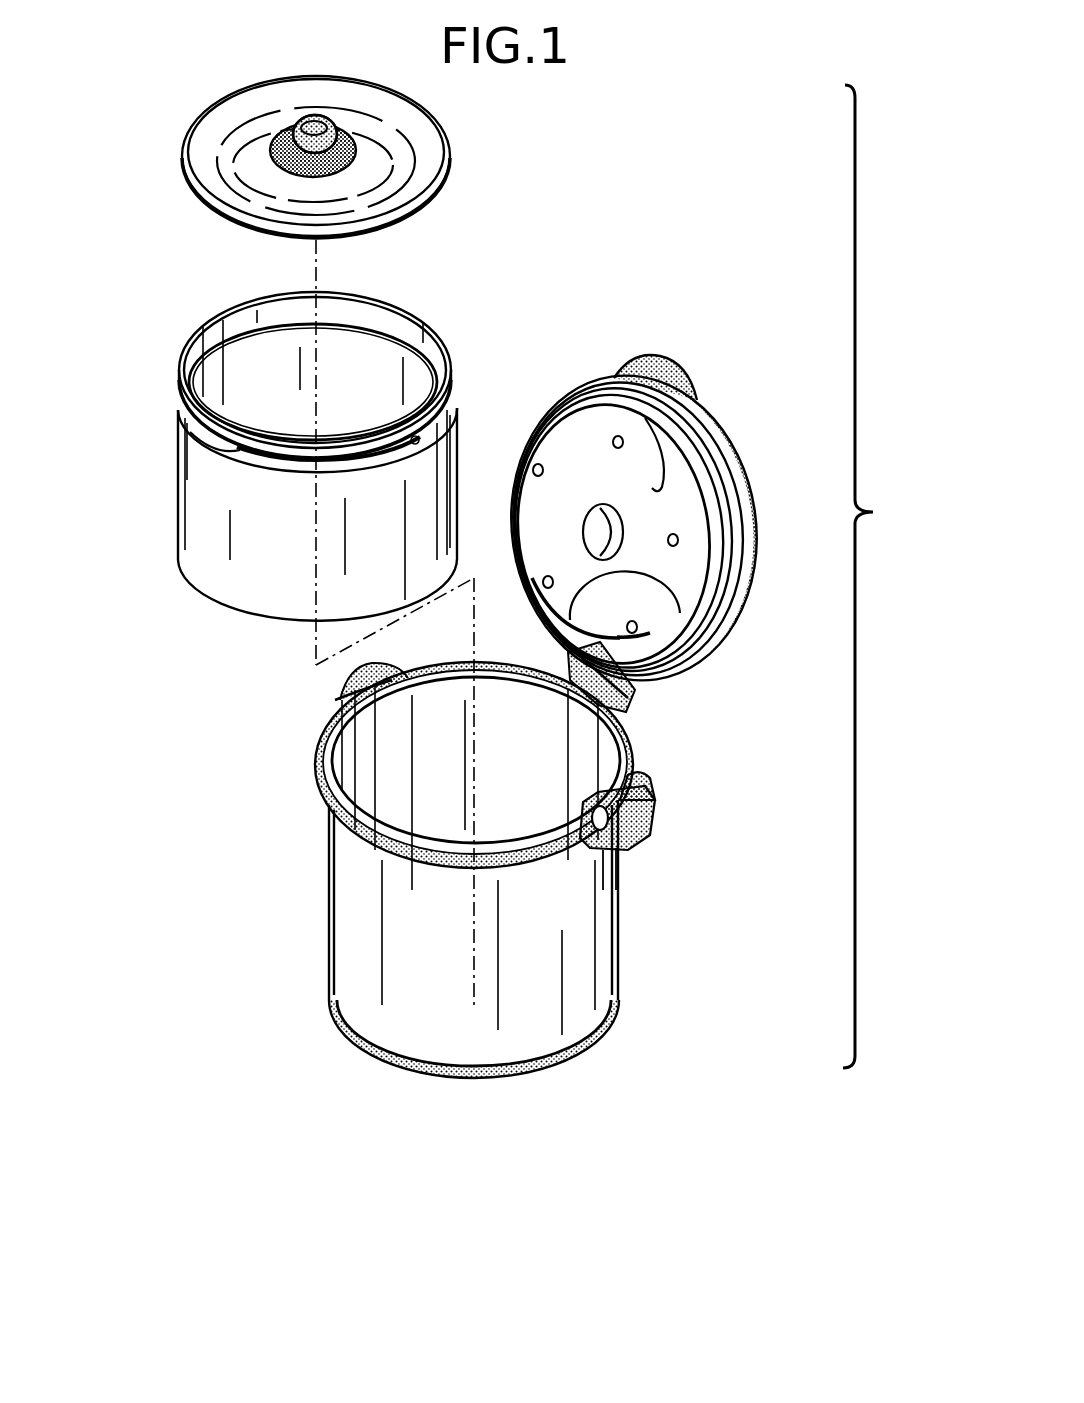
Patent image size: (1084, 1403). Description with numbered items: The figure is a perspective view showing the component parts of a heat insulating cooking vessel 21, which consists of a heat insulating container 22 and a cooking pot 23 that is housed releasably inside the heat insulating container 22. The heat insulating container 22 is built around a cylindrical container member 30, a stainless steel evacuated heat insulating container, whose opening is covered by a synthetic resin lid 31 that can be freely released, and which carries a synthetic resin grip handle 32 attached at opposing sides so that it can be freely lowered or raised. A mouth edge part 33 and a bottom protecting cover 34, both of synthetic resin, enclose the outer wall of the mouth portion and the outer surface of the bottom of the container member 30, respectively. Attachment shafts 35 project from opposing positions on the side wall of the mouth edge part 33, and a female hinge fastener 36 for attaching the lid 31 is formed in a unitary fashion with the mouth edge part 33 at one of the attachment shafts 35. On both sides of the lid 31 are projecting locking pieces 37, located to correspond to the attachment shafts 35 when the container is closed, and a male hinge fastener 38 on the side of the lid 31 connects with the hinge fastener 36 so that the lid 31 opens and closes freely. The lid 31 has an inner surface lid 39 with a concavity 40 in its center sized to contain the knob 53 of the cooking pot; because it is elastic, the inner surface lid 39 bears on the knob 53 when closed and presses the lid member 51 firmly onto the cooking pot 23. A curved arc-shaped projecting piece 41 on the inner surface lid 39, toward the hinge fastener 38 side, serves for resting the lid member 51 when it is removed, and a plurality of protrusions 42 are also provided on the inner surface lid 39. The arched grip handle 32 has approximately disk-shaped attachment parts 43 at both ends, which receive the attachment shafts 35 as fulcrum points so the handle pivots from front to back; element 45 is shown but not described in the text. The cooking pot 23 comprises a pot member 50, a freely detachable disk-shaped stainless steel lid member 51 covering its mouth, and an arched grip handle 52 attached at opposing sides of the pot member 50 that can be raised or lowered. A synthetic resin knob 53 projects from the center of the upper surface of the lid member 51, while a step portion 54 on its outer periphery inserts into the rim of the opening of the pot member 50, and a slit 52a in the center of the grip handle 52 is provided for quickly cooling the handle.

The heat insulating cooking vessel 21 is at (881, 576).
The heat insulating container 22 is at (469, 901).
The cooking pot 23 is at (434, 320).
The container member 30 is at (360, 923).
The lid 31 is at (708, 415).
The grip handle 32 is at (648, 830).
The mouth edge part 33 is at (340, 828).
The bottom protecting cover 34 is at (363, 1045).
The attachment shaft 35 is at (333, 697).
The female hinge fastener 36 is at (622, 708).
The locking piece 37 is at (755, 570).
The male hinge fastener 38 is at (567, 647).
The inner surface lid 39 is at (660, 487).
The concavity 40 is at (625, 537).
The projecting piece 41 is at (690, 632).
The protrusions 42 is at (536, 465).
The attachment part 43 is at (327, 684).
The lug edge 45 is at (330, 727).
The pot member 50 is at (228, 510).
The lid member 51 is at (448, 150).
The grip handle 52 is at (362, 452).
The slit 52a is at (190, 467).
The knob 53 is at (320, 128).
The step portion 54 is at (405, 123).